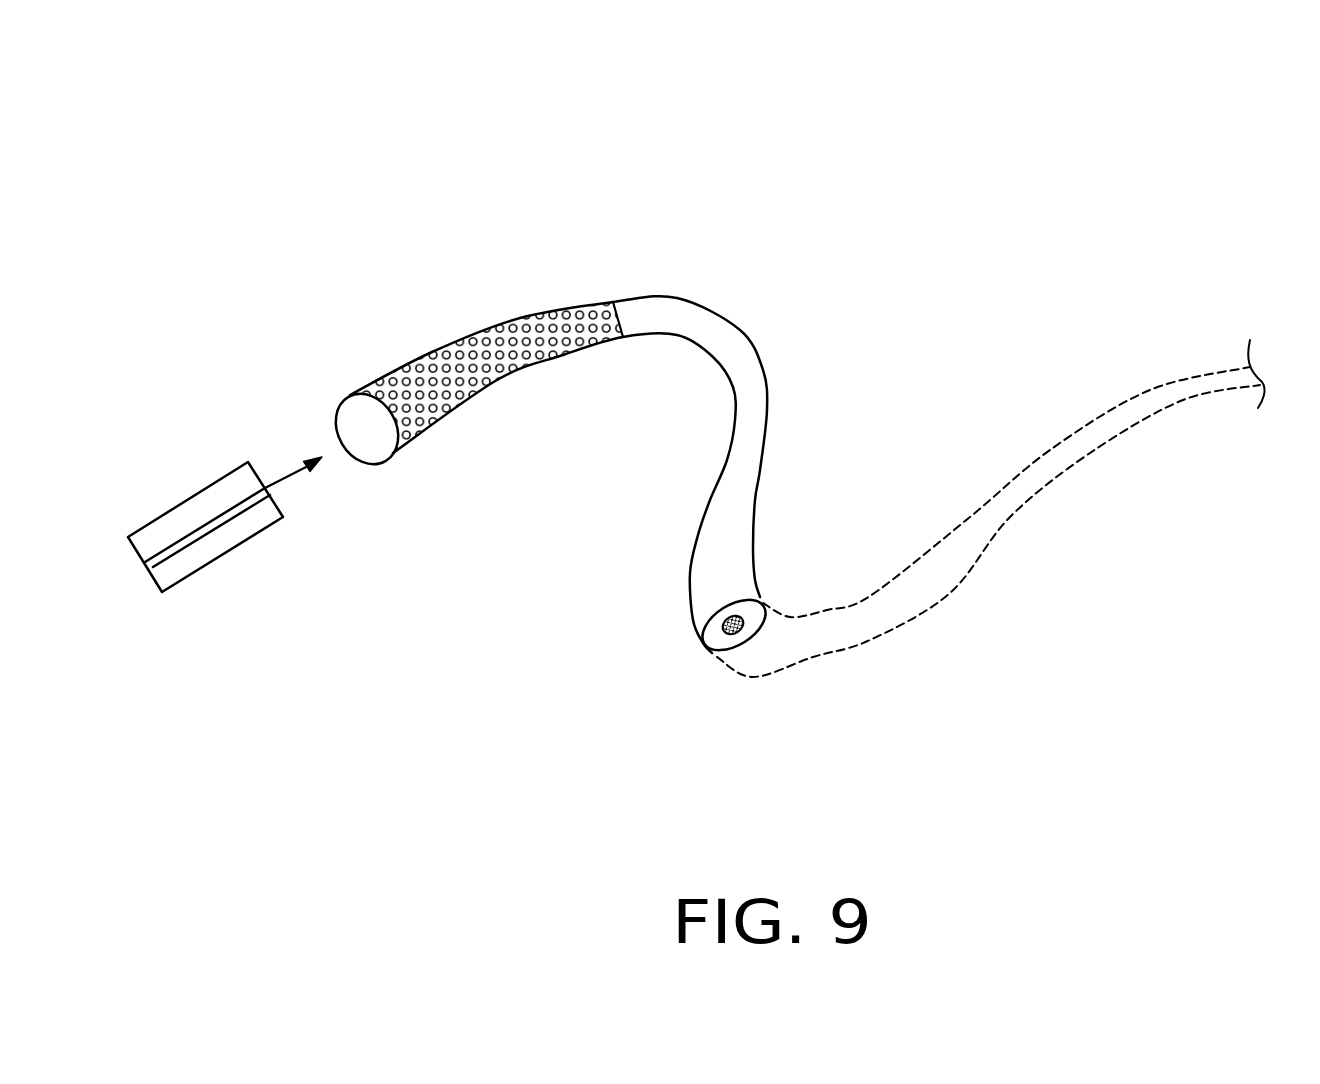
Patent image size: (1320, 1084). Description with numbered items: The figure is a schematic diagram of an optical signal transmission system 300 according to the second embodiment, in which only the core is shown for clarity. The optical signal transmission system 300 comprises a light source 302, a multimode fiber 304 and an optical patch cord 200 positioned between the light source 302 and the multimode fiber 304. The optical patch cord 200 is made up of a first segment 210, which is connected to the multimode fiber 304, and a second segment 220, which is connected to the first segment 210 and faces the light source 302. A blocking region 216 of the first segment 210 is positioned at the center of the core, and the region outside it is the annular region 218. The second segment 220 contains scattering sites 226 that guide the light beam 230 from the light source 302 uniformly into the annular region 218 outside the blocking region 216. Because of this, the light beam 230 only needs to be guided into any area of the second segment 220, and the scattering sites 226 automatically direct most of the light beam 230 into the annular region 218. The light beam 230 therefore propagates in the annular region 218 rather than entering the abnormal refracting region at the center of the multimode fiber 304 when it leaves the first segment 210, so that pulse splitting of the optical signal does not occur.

The optical patch cord 200 is at (410, 197).
The first segment 210 is at (673, 300).
The second segment 220 is at (432, 353).
The scattering sites 226 is at (448, 418).
The blocking region 216 is at (740, 617).
The annular region 218 is at (715, 642).
The light beam 230 is at (285, 483).
The optical signal transmission system 300 is at (816, 238).
The light source 302 is at (187, 498).
The multimode fiber 304 is at (993, 530).